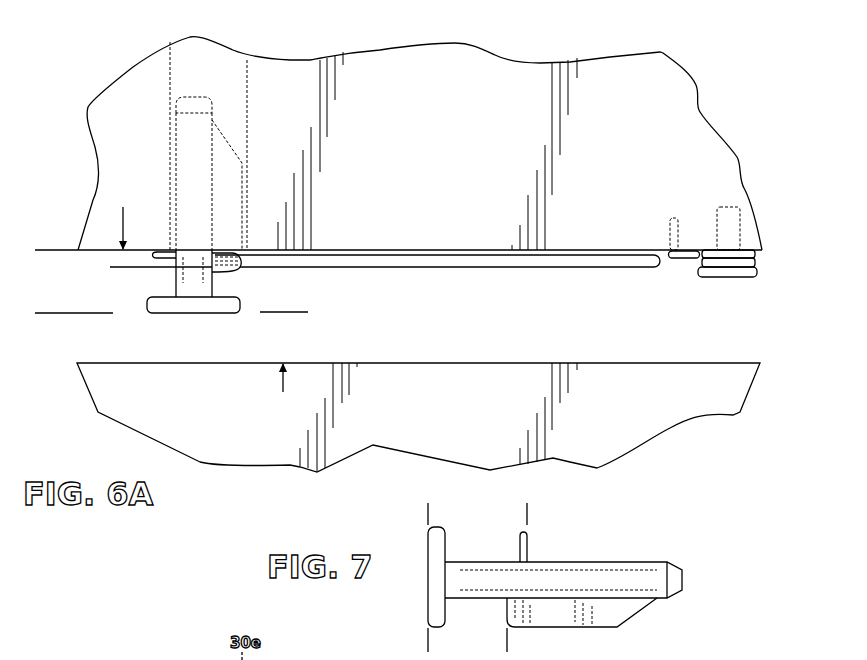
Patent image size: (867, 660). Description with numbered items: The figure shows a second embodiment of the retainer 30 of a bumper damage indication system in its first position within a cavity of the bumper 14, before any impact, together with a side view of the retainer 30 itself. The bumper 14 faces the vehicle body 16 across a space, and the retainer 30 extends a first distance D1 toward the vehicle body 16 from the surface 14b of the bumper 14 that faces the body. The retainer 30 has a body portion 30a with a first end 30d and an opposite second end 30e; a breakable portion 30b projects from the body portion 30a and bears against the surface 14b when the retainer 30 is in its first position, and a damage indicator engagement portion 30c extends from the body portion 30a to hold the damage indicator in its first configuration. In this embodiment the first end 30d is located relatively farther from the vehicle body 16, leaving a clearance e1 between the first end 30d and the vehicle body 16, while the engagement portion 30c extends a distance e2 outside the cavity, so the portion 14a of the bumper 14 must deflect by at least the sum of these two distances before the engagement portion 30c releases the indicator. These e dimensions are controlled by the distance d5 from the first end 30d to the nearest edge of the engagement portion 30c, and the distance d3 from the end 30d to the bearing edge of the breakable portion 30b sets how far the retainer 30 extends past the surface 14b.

In FIG. 6A, the rear bumper 14 is at (97, 92).
In FIG. 6A, the portion of the bumper 14a is at (115, 145).
In FIG. 6A, the surface of the bumper 14b is at (442, 252).
In FIG. 6A, the vehicle body 16 is at (192, 363).
In FIG. 7, the retainer 30 is at (660, 604).
In FIG. 6A, the body portion 30a is at (187, 177).
In FIG. 7, the body portion 30a is at (640, 575).
In FIG. 6A, the breakable portion 30b is at (153, 255).
In FIG. 7, the breakable portion 30b is at (528, 560).
In FIG. 6A, the damage indicator engagement portion 30c is at (230, 197).
In FIG. 7, the damage indicator engagement portion 30c is at (558, 618).
In FIG. 6A, the first end 30d is at (193, 307).
In FIG. 7, the first end 30d is at (433, 600).
In FIG. 6A, the second end 30e is at (192, 97).
In FIG. 6A, the first distance D1 is at (45, 252).
In FIG. 6A, the clearance e1' e1 is at (283, 268).
In FIG. 6A, the distance e2 is at (123, 269).
In FIG. 7, the distance d3 is at (526, 515).
In FIG. 7, the distance d5 is at (506, 637).